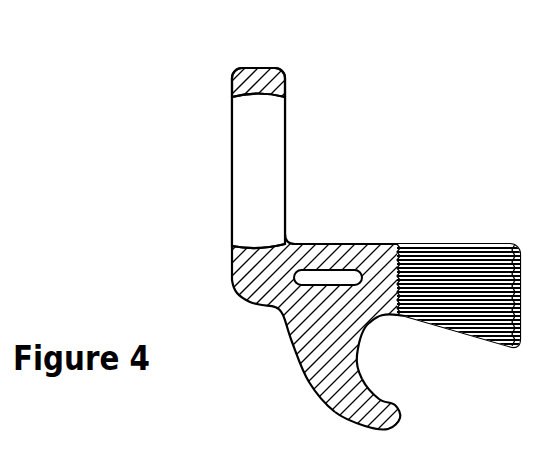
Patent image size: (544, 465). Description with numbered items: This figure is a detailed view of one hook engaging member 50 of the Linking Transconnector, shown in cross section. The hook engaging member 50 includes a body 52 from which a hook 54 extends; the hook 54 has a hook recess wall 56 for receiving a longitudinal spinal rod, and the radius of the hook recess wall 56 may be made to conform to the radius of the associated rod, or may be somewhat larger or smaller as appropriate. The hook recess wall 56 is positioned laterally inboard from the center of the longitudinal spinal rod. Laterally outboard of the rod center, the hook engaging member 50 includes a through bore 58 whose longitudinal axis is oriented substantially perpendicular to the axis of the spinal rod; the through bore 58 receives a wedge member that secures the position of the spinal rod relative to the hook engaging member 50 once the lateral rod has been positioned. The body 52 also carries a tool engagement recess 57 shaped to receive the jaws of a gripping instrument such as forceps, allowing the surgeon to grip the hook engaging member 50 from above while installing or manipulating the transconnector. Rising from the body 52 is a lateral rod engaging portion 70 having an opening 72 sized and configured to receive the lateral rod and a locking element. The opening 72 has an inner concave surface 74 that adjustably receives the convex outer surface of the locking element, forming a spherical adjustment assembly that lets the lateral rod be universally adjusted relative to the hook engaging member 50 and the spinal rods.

The hook engaging member 50 is at (436, 137).
The body 52 is at (313, 333).
The hook 54 is at (359, 397).
The hook recess wall 56 is at (367, 339).
The tool engagement recess 57 is at (318, 277).
The through bore 58 is at (469, 258).
The lateral rod engaging portion 70 is at (259, 67).
The opening 72 is at (242, 158).
The inner concave surface 74 is at (262, 246).